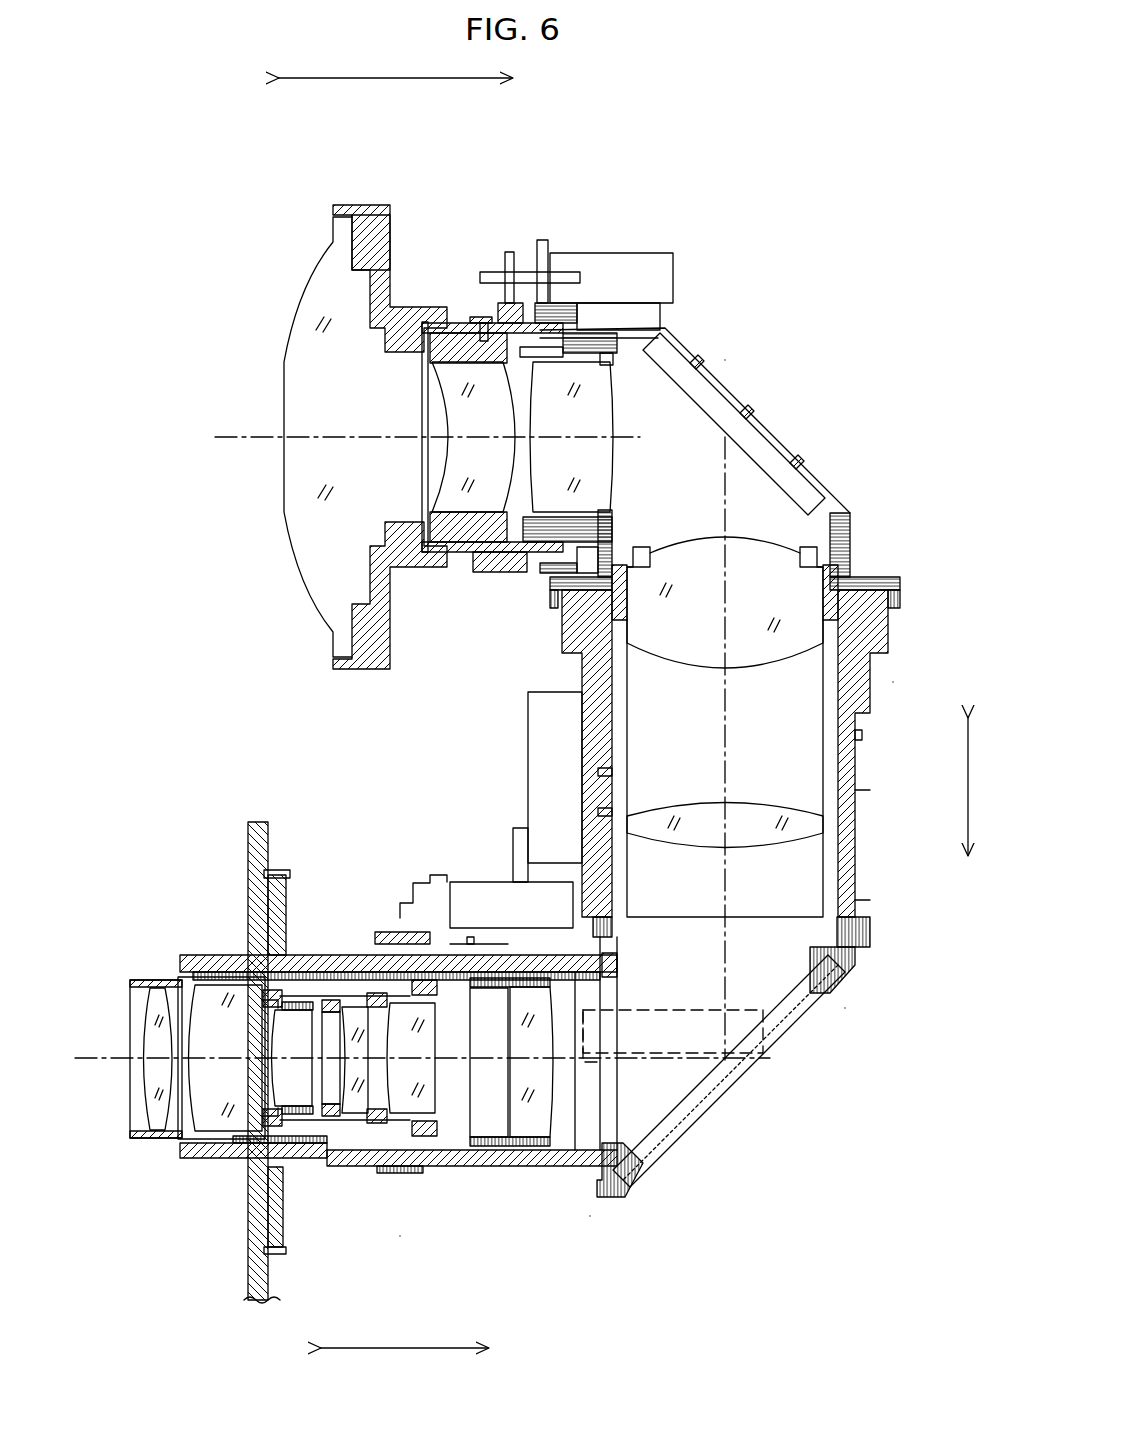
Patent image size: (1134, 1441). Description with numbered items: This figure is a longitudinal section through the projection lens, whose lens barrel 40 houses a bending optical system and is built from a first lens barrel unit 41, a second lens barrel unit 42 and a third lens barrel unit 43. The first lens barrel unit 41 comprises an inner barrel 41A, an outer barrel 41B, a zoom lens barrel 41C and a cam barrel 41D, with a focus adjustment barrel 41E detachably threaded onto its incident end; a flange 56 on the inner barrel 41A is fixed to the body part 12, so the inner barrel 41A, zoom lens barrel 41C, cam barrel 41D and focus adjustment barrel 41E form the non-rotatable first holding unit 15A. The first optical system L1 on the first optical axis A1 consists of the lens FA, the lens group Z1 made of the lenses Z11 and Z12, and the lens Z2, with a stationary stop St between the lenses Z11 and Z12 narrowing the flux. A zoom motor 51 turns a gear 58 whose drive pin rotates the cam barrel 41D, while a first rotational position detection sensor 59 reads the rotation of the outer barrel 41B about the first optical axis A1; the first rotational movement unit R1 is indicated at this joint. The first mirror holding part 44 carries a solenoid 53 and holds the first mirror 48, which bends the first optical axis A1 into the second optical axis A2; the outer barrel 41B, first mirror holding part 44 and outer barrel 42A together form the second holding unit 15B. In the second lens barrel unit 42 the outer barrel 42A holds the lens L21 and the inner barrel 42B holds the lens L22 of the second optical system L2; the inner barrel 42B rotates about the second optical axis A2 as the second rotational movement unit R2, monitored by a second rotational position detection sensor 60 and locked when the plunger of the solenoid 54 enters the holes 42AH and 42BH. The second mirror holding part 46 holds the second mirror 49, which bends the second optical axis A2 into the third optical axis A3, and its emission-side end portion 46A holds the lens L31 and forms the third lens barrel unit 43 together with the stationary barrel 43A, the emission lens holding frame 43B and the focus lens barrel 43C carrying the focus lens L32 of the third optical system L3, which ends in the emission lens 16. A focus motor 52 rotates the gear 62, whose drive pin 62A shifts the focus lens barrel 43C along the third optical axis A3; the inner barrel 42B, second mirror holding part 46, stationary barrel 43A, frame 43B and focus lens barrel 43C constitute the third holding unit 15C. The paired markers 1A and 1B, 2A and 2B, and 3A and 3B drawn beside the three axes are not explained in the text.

The lens barrel 40 is at (309, 392).
The third lens barrel unit 43 is at (369, 392).
The emission lens holding frame 43B is at (375, 210).
The focus lens barrel 43C is at (468, 340).
The stationary barrel 43A is at (460, 552).
The drive pin 62A is at (482, 276).
The gear 62 is at (485, 330).
The focus motor 52 is at (570, 262).
The emission-side end portion 46A is at (585, 350).
The second mirror holding part 46 is at (680, 342).
The third holding unit 15C is at (732, 354).
The second mirror 49 is at (727, 420).
The third optical axis A3 is at (258, 436).
The lens L32 is at (443, 382).
The lens L31 is at (603, 458).
The third optical system L3 is at (278, 510).
The emission lens 16 is at (262, 437).
The second lens barrel unit 42 is at (685, 747).
The second rotational movement unit R2 is at (898, 678).
The lens L22 is at (700, 650).
The second optical system L2 is at (721, 692).
The lens L21 is at (700, 808).
The second optical axis A2 is at (729, 736).
The direction 2B is at (968, 764).
The direction 2A is at (968, 874).
The second rotational position detection sensor 60 is at (864, 736).
The solenoid 54 is at (535, 720).
The hole 42AH is at (598, 772).
The inner barrel 42B is at (850, 803).
The zoom motor 51 is at (500, 882).
The first rotational position detection sensor 59 is at (470, 937).
The hole 42BH is at (616, 812).
The outer barrel 42A is at (852, 897).
The zoom lens barrel 41C is at (186, 970).
The cam barrel 41D is at (242, 972).
The focus adjustment barrel 41E is at (134, 972).
The flange 56 is at (286, 892).
The inner barrel 41A is at (340, 958).
The gear 58 is at (395, 930).
The first optical axis A1 is at (100, 1056).
The solenoid 53 is at (672, 1030).
The lens FA is at (150, 1080).
The second holding unit 15B is at (852, 1015).
The first mirror 48 is at (720, 1087).
The lens Z11 is at (215, 1140).
The lens group Z1 is at (241, 1108).
The stationary stop St is at (331, 1120).
The lens Z12 is at (378, 1128).
The first optical system L1 is at (361, 1127).
The lens Z2 is at (520, 1140).
The outer barrel 41B is at (567, 1170).
The first mirror holding part 44 is at (636, 1210).
The body part 12 is at (272, 1280).
The first holding unit 15A is at (403, 1243).
The first lens barrel unit 41 is at (353, 1076).
The first rotational movement unit R1 is at (592, 1222).
The direction 1A is at (384, 1347).
The direction 1B is at (507, 1347).
The direction 3A is at (531, 77).
The direction 3B is at (375, 77).